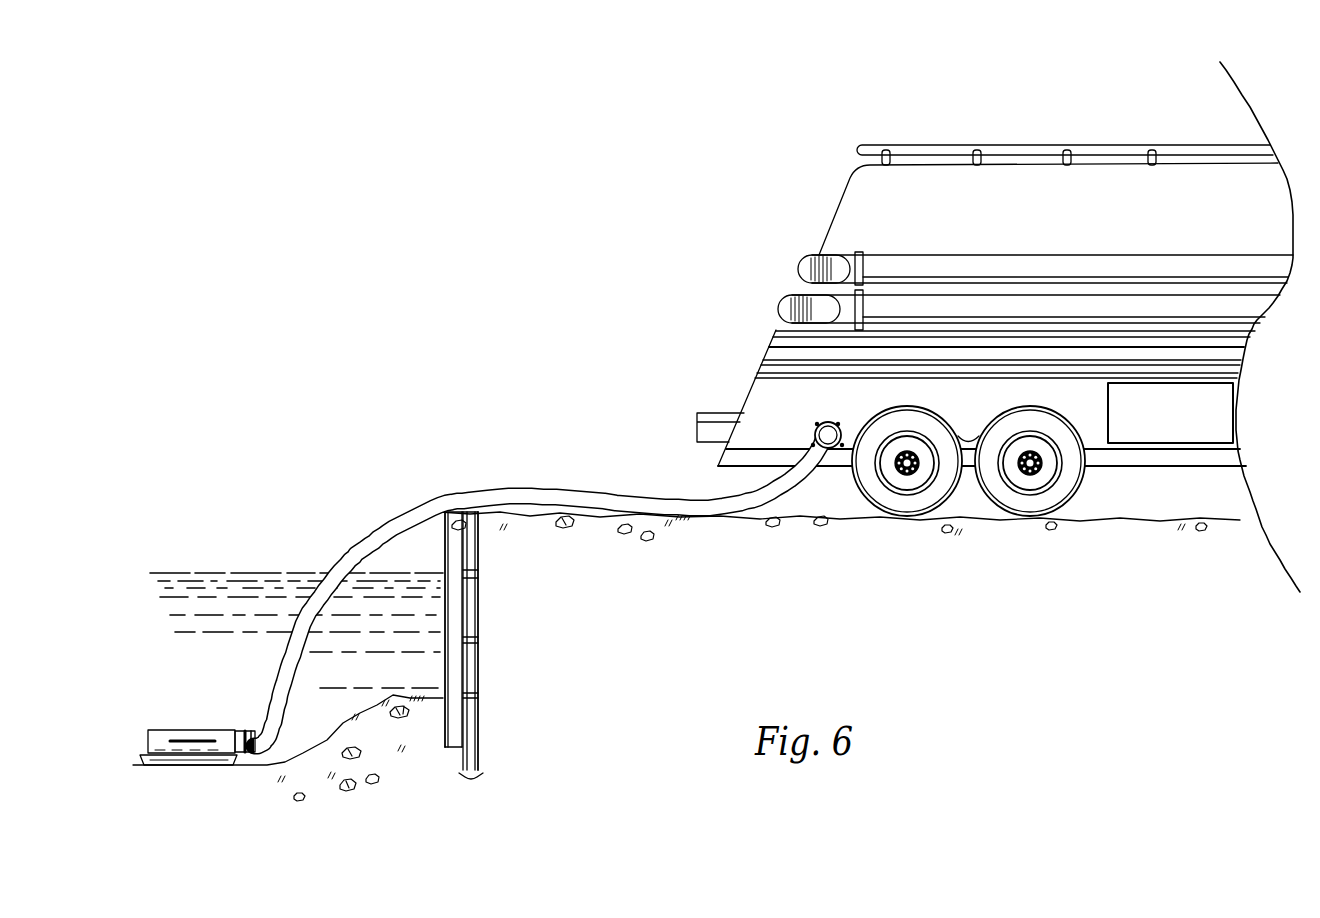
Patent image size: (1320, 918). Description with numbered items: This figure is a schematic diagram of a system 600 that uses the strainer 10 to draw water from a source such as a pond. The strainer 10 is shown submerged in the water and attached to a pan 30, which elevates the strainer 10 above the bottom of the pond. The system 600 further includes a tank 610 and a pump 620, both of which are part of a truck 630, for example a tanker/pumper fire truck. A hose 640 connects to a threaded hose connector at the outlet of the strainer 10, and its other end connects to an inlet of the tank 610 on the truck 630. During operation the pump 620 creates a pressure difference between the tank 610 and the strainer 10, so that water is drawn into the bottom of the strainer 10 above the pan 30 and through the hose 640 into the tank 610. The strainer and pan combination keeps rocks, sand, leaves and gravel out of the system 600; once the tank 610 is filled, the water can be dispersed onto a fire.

The system 600 is at (380, 229).
The tank 610 is at (822, 230).
The pump 620 is at (1188, 433).
The truck 630 is at (1142, 123).
The hose 640 is at (369, 523).
The strainer 10 is at (198, 730).
The pan 30 is at (180, 767).